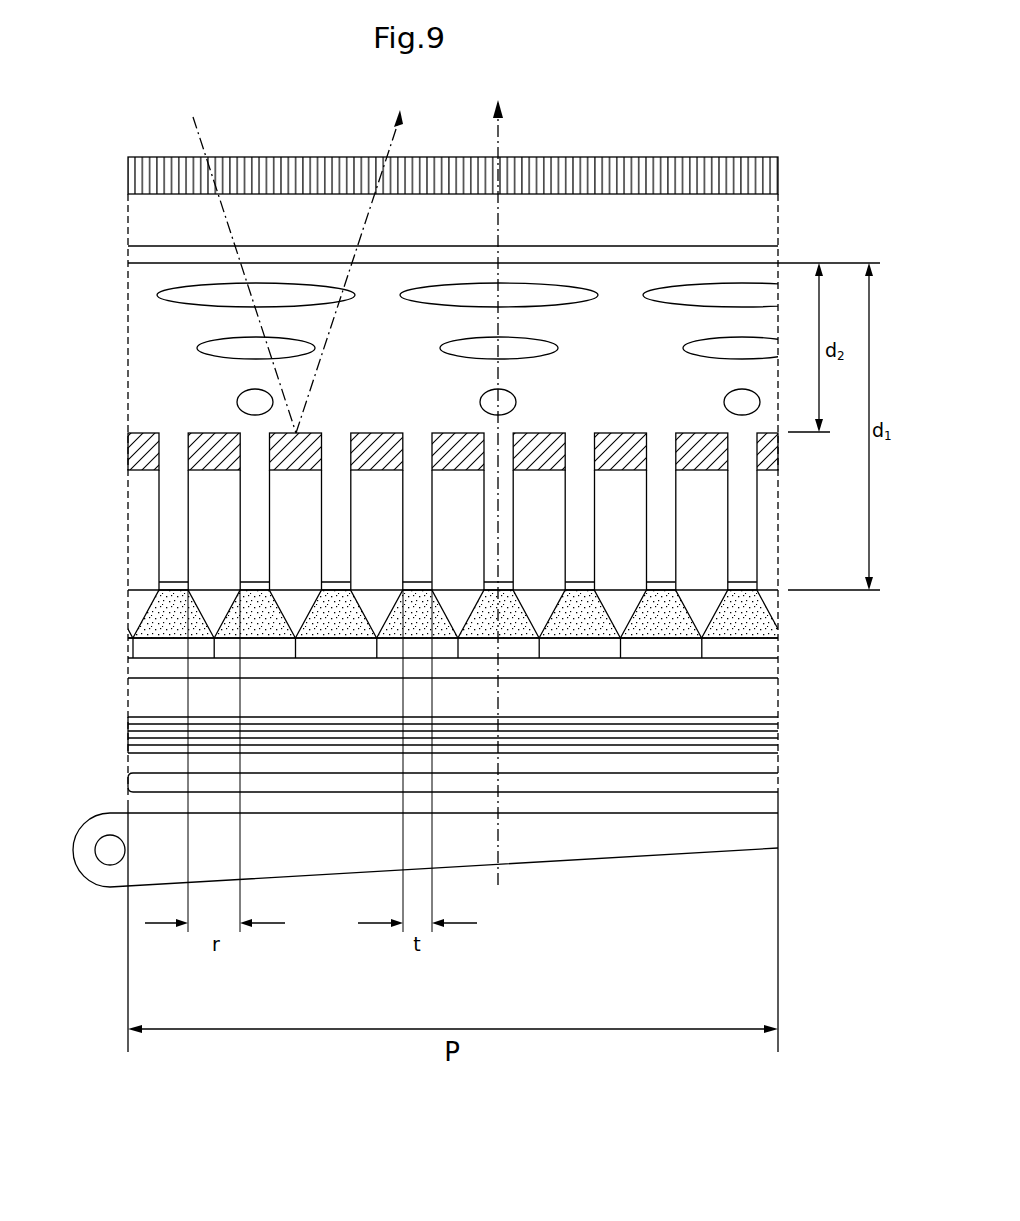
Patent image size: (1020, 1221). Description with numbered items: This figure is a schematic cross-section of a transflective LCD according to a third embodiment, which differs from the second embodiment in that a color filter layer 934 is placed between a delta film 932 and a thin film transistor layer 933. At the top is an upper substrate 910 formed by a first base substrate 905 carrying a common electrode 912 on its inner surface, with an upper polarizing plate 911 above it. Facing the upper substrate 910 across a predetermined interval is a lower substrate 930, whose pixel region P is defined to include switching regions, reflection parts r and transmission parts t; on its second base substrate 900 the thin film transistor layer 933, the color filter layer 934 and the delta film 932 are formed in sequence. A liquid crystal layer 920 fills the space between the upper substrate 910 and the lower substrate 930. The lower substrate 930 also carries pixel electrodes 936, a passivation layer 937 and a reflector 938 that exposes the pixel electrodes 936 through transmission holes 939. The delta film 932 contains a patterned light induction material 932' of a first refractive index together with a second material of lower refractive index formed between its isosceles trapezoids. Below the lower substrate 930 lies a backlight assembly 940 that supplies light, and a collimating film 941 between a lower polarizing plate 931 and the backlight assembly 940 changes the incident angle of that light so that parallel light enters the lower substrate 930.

The second base substrate 900 is at (772, 700).
The first base substrate 905 is at (768, 220).
The upper substrate 910 is at (122, 197).
The polarizing plate 911 is at (768, 172).
The common electrode 912 is at (768, 253).
The liquid crystal layer 920 is at (117, 263).
The lower substrate 930 is at (110, 435).
The lower polarizing plate 931 is at (760, 733).
The delta film 932 is at (412, 614).
The light induction material 932' is at (157, 671).
The thin film transistor layer 933 is at (773, 668).
The color filter layer 934 is at (767, 645).
The pixel electrodes 936 is at (745, 583).
The passivation layer 937 is at (205, 532).
The reflector 938 is at (208, 462).
The transmission holes 939 is at (173, 443).
The backlight assembly 940 is at (65, 813).
The collimating film 941 is at (766, 782).